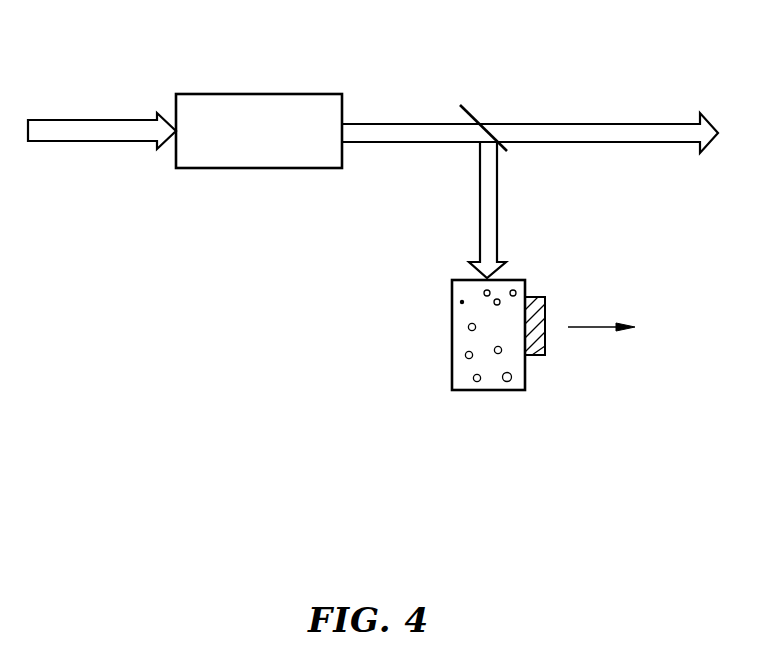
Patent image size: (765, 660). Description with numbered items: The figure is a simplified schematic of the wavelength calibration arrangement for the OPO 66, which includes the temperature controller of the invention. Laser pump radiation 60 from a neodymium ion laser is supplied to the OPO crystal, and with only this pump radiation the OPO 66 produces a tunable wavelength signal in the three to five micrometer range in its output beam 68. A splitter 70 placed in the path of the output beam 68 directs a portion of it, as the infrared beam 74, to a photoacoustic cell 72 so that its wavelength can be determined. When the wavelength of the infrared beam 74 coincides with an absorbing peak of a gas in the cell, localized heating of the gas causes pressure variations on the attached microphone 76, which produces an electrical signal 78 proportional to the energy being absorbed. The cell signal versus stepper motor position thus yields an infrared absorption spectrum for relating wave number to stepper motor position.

The laser pump radiation 60 is at (90, 120).
The OPO 66 is at (278, 75).
The output beam 68 is at (400, 143).
The splitter 70 is at (478, 110).
The photoacoustic (PAC) cell 72 is at (488, 392).
The infrared beam 74 is at (500, 192).
The microphone 76 is at (540, 297).
The electrical signal 78 is at (593, 328).